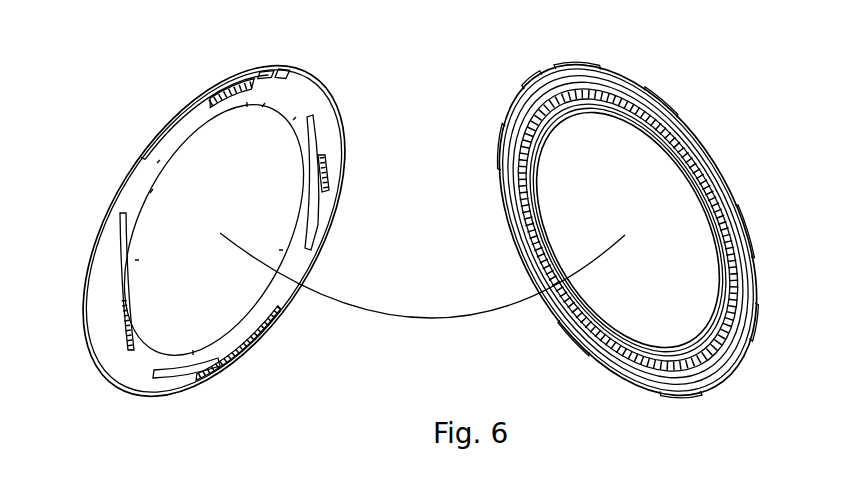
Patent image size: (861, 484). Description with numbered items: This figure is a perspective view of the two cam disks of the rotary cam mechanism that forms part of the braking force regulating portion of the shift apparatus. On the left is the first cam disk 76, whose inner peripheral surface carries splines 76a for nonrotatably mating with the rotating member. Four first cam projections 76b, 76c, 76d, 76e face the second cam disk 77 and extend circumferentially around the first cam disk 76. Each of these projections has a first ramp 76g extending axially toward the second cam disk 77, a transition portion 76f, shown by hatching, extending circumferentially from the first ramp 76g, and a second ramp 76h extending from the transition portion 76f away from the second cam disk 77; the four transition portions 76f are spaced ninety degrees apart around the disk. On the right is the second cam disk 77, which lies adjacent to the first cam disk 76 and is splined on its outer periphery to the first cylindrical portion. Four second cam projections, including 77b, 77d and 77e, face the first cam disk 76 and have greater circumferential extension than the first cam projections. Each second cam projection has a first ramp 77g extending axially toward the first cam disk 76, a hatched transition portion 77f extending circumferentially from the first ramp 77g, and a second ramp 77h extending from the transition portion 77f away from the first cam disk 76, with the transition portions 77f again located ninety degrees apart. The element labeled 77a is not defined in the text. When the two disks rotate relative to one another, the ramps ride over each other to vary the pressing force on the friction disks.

The first cam disk 76 is at (323, 102).
The splines 76a is at (184, 150).
The first cam projection 76b is at (280, 70).
The first cam projection 76c is at (262, 330).
The first cam projection 76d is at (107, 302).
The first cam projection 76e is at (326, 172).
The transition portion 76f is at (221, 92).
The first ramp 76g is at (265, 72).
The second ramp 76h is at (168, 126).
The second cam disk 77 is at (577, 73).
The projection 77a is at (663, 97).
The second cam projection 77b is at (510, 115).
The second cam projection 77d is at (600, 93).
The second cam projection 77e is at (667, 358).
The transition portion 77f is at (572, 332).
The first ramp 77g is at (500, 134).
The second ramp 77h is at (680, 398).